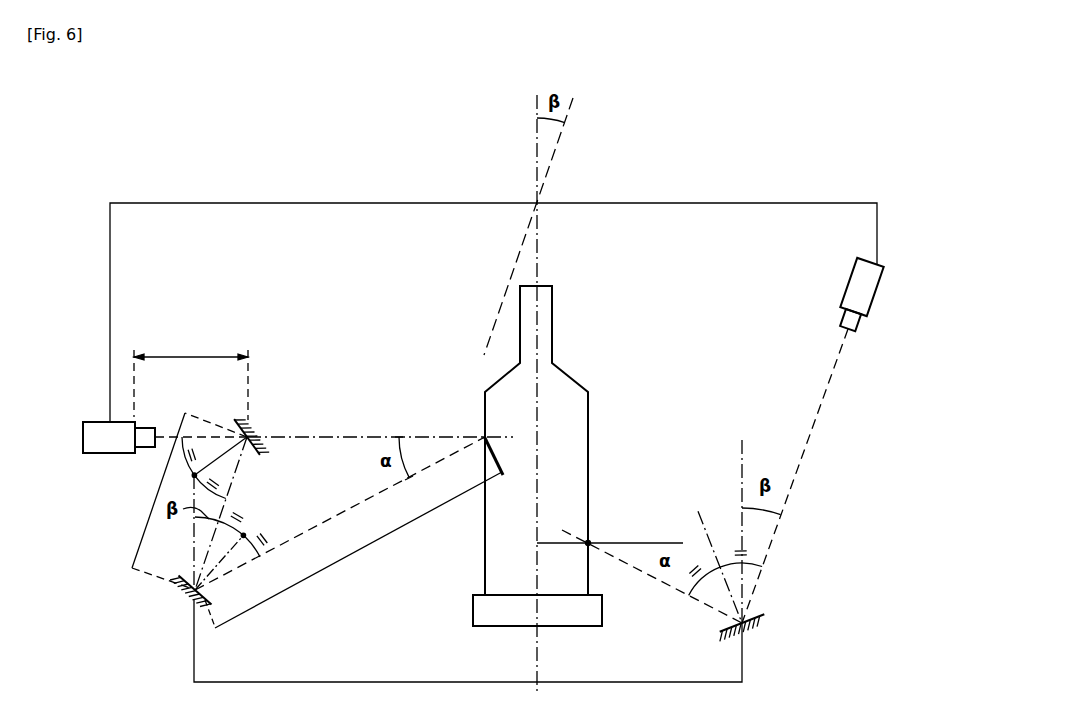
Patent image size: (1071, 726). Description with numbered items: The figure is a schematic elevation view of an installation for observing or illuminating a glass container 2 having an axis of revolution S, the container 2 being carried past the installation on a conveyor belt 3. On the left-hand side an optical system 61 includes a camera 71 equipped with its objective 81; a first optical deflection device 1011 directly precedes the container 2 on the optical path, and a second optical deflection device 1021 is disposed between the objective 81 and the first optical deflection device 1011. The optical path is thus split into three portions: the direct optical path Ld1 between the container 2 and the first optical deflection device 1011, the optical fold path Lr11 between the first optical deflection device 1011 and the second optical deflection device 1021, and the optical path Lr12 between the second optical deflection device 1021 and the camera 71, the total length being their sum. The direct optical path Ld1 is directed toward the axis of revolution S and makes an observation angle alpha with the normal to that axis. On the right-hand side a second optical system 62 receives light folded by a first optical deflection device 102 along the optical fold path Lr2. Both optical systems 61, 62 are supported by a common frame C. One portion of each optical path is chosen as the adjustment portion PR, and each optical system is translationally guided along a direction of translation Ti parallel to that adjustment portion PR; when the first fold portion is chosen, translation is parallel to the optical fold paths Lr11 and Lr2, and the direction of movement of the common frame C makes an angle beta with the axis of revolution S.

The glass container 2 is at (588, 424).
The conveyor belt 3 is at (473, 612).
The optical system 61 is at (102, 454).
The optical system 62 is at (842, 288).
The camera 71 is at (103, 427).
The objective 81 is at (147, 428).
The first optical deflection device 102 is at (754, 620).
The first optical deflection device 1011 is at (190, 578).
The second optical deflection device 1021 is at (237, 421).
The common frame C is at (333, 203).
The axis of revolution S is at (539, 258).
The direction of translation Ti is at (553, 158).
The adjustment portion PR is at (232, 482).
The optical fold path Lr2 is at (797, 478).
The optical fold path Lr11 is at (149, 500).
The optical path Lr12 is at (191, 377).
The direct optical path Ld1 is at (354, 532).